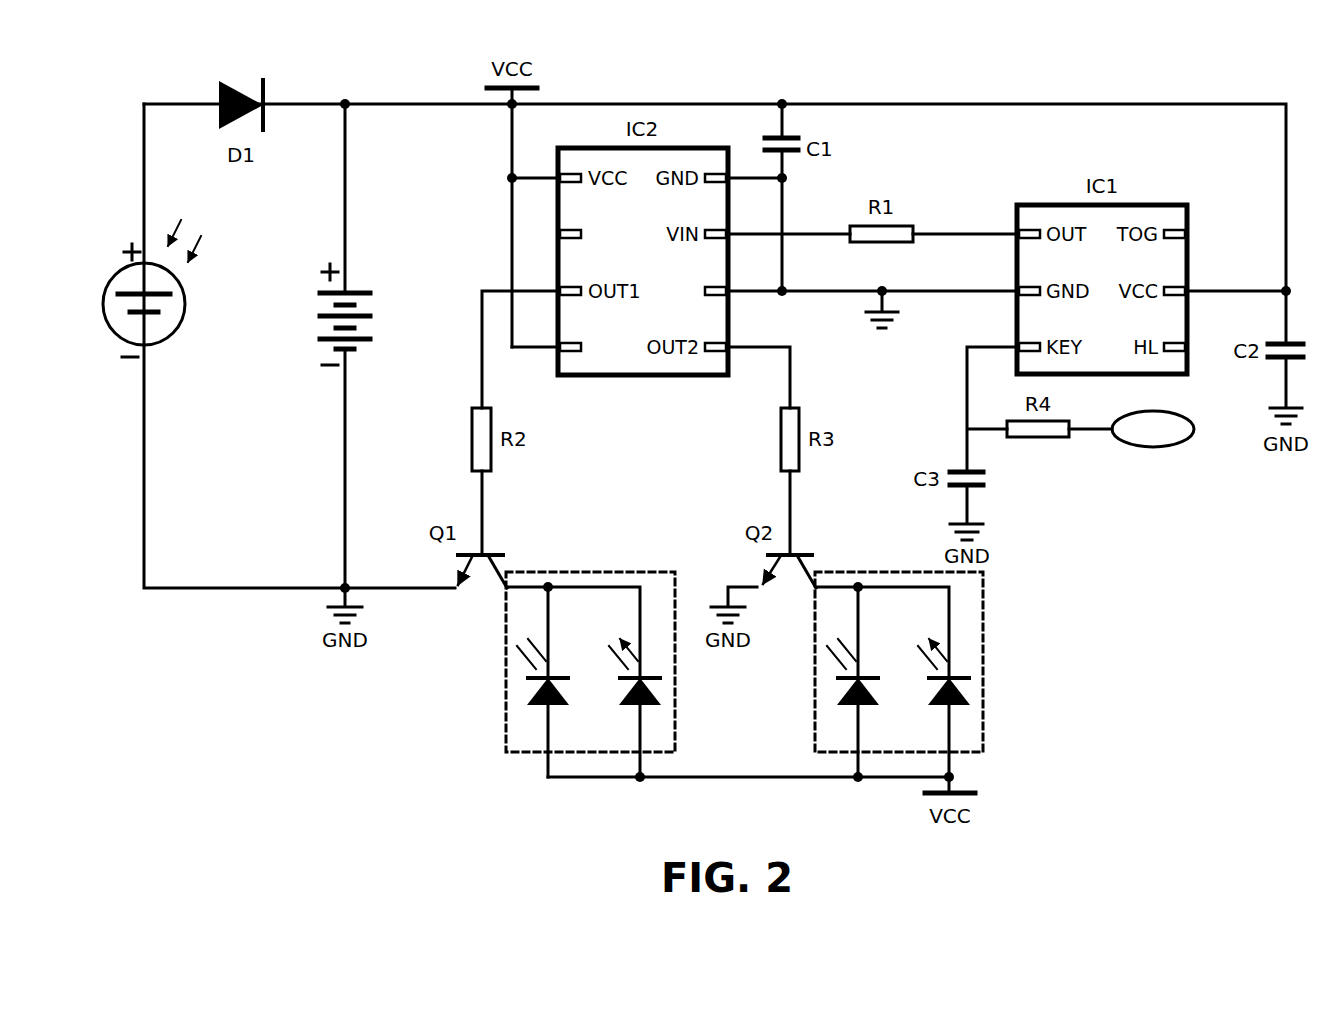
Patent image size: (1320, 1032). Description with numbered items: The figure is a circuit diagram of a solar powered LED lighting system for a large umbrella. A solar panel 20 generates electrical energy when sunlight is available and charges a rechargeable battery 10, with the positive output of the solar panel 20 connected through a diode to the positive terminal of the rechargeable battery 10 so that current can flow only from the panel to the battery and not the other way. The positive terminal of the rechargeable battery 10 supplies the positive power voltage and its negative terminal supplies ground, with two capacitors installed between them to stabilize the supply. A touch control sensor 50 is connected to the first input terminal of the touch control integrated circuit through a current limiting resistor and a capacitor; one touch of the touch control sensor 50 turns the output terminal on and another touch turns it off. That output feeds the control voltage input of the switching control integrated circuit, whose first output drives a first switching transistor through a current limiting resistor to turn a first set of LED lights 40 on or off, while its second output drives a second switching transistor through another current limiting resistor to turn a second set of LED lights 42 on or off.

The rechargeable battery 10 is at (370, 335).
The solar panel 20 is at (175, 330).
The first set of LED lights 40 is at (613, 571).
The second set of LED lights 42 is at (906, 571).
The touch control sensor 50 is at (1185, 446).